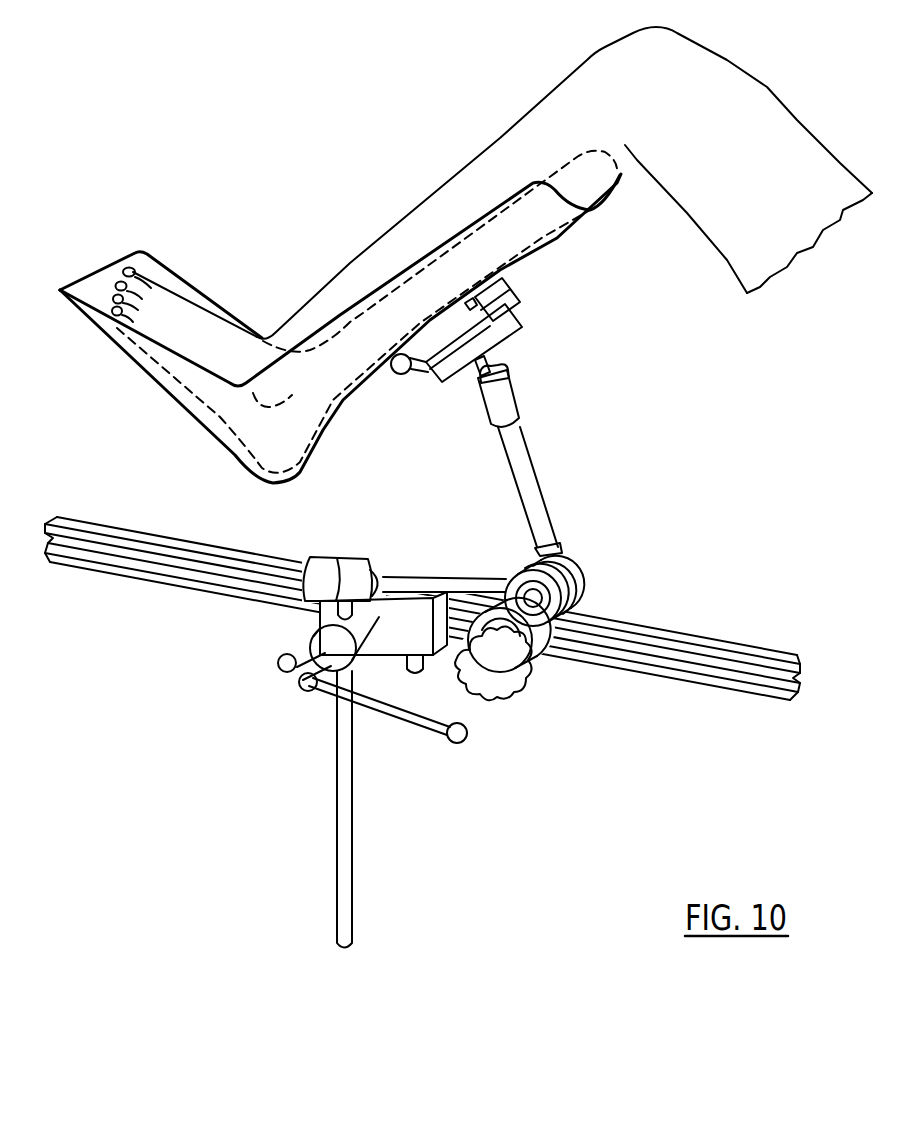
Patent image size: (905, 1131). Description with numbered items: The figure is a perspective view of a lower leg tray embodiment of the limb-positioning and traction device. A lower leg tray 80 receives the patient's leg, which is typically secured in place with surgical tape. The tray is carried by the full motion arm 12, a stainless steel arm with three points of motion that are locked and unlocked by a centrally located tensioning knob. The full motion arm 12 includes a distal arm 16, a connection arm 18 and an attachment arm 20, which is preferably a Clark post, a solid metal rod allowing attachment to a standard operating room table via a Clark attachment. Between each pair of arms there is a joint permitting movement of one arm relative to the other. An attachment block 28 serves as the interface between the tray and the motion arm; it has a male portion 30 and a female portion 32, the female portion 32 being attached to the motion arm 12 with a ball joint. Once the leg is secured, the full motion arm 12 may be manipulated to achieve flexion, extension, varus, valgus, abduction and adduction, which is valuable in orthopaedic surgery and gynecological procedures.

The full motion arm 12 is at (533, 528).
The distal arm 16 is at (540, 436).
The connection arm 18 is at (438, 577).
The attachment arm 20 is at (352, 860).
The attachment block 28 is at (507, 323).
The male portion 30 is at (499, 292).
The female portion 32 is at (520, 320).
The lower leg tray 80 is at (327, 427).